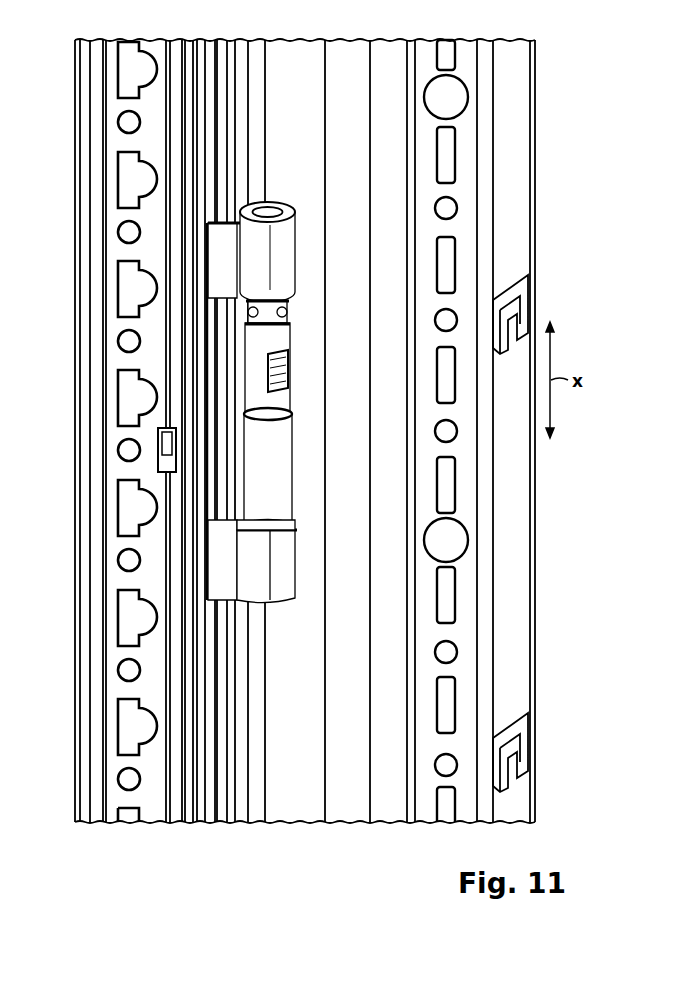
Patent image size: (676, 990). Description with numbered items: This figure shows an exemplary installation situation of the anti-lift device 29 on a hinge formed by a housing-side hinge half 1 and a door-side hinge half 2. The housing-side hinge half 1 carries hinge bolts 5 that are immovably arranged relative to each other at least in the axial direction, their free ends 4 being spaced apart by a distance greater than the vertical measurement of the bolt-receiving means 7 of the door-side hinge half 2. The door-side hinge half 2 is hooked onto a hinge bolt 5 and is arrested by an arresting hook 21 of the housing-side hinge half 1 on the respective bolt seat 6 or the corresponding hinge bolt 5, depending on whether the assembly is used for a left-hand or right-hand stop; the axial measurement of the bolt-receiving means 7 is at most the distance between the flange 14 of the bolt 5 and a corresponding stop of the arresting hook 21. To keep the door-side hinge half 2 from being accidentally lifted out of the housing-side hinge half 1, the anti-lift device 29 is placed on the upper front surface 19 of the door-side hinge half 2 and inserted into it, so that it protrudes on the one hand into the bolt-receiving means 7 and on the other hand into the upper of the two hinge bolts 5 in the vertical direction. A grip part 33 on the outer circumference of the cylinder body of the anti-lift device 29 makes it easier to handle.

The housing-side hinge half 1 is at (300, 206).
The door-side hinge half 2 is at (285, 590).
The free ends 4 is at (243, 336).
The hinge bolt 5 is at (300, 297).
The bolt seat 6 is at (281, 592).
The bolt-receiving means 7 is at (270, 468).
The flange 14 is at (296, 534).
The upper front surface 19 is at (263, 412).
The arresting hook 21 is at (210, 425).
The anti-lift device 29 is at (300, 325).
The grip part 33 is at (289, 378).